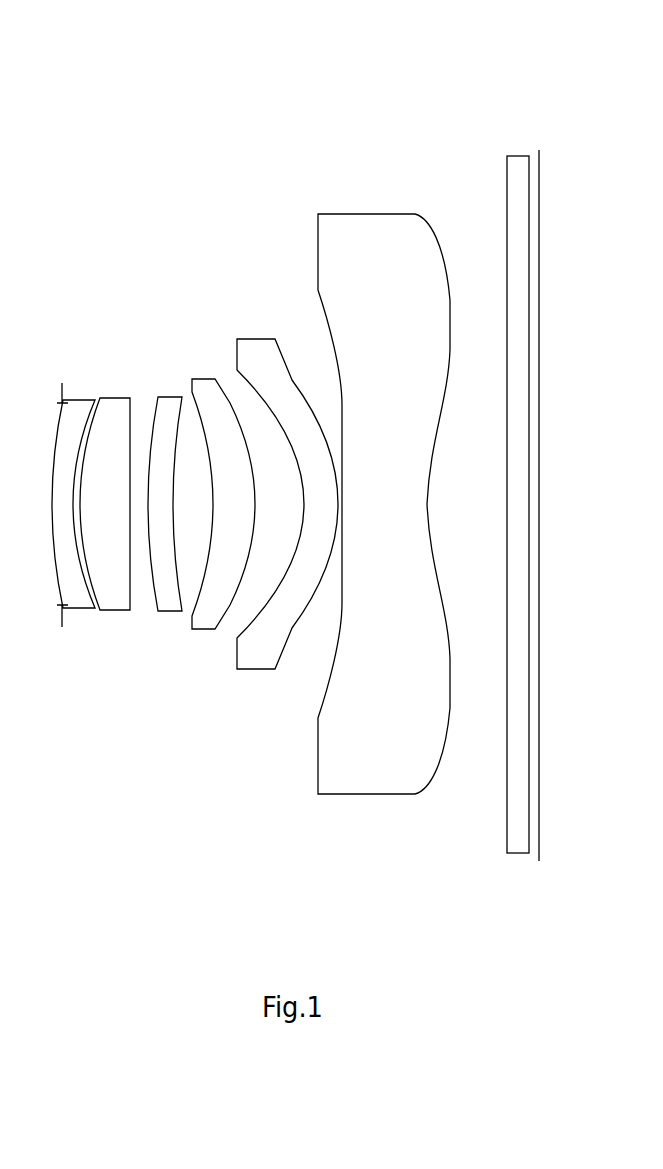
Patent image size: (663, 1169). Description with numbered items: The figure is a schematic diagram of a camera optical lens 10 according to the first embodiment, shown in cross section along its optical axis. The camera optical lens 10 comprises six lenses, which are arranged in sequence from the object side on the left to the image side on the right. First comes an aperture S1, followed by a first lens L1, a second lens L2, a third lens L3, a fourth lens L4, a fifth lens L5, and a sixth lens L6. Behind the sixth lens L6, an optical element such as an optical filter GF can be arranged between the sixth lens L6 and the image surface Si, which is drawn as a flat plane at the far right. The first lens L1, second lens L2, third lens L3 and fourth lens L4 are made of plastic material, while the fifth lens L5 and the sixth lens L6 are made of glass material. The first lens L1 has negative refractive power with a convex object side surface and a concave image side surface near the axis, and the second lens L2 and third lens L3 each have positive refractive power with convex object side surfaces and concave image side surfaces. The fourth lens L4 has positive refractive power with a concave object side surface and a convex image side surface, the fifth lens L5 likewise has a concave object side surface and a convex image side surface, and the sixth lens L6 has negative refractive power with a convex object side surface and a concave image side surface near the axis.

The camera optical lens 10 is at (309, 41).
The aperture S1 is at (55, 486).
The first lens L1 is at (73, 486).
The second lens L2 is at (105, 487).
The third lens L3 is at (165, 488).
The fourth lens L4 is at (223, 487).
The fifth lens L5 is at (287, 493).
The sixth lens L6 is at (384, 490).
The optical filter GF is at (511, 490).
The image surface Si is at (542, 494).